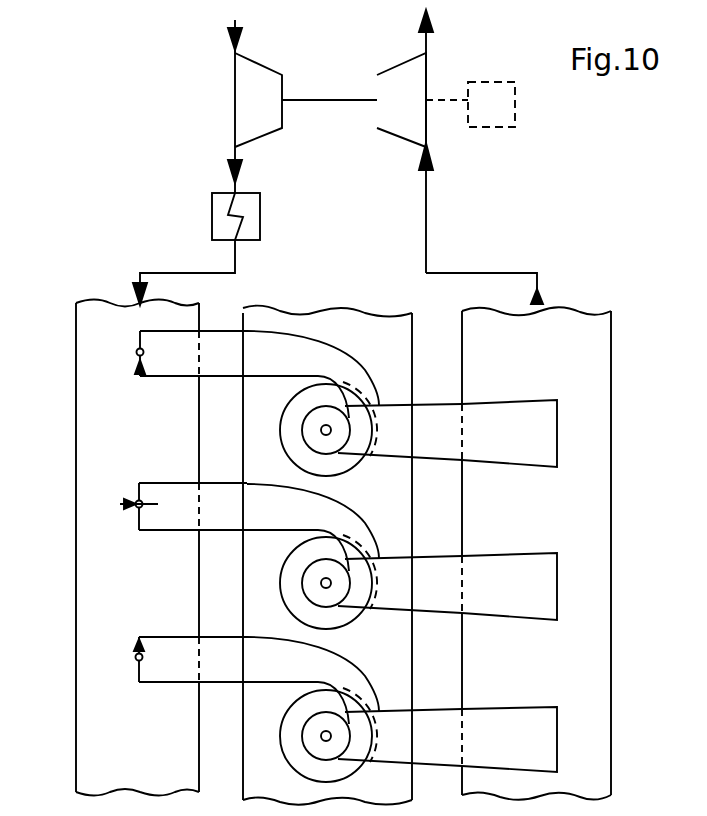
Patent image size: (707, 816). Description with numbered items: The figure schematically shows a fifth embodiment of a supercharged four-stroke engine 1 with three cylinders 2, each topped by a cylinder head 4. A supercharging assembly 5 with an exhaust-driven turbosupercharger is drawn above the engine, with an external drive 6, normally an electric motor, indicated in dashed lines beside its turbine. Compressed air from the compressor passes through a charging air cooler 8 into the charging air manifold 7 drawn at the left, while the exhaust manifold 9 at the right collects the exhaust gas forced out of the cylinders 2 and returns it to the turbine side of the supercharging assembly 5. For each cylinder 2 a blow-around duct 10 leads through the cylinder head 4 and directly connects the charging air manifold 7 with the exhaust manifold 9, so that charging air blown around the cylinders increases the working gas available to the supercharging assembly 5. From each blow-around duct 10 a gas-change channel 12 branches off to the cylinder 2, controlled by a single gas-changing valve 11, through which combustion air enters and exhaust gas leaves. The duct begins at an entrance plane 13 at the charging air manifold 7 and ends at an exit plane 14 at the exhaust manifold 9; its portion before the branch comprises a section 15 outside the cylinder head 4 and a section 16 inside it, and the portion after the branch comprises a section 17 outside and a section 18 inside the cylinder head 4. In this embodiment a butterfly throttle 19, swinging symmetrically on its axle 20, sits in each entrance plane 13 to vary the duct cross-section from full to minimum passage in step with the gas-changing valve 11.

The engine 1 is at (241, 760).
The cylinder 2 is at (304, 436).
The cylinder head 4 is at (412, 332).
The supercharging assembly 5 is at (334, 87).
The external drive 6 is at (521, 115).
The charging air manifold 7 is at (92, 372).
The charging air cooler 8 is at (212, 216).
The exhaust manifold 9 is at (613, 511).
The blow-around duct 10 is at (362, 368).
The gas-changing valve 11 is at (322, 423).
The gas-change channel 12 is at (303, 432).
The entrance plane 13 is at (134, 331).
The exit plane 14 is at (558, 433).
The duct section outside cylinder head 15 is at (215, 340).
The duct section inside cylinder head 16 is at (263, 343).
The duct section outside cylinder head 17 is at (525, 416).
The duct section inside cylinder head 18 is at (392, 423).
The throttle 19 is at (135, 372).
The axle 20 is at (134, 352).